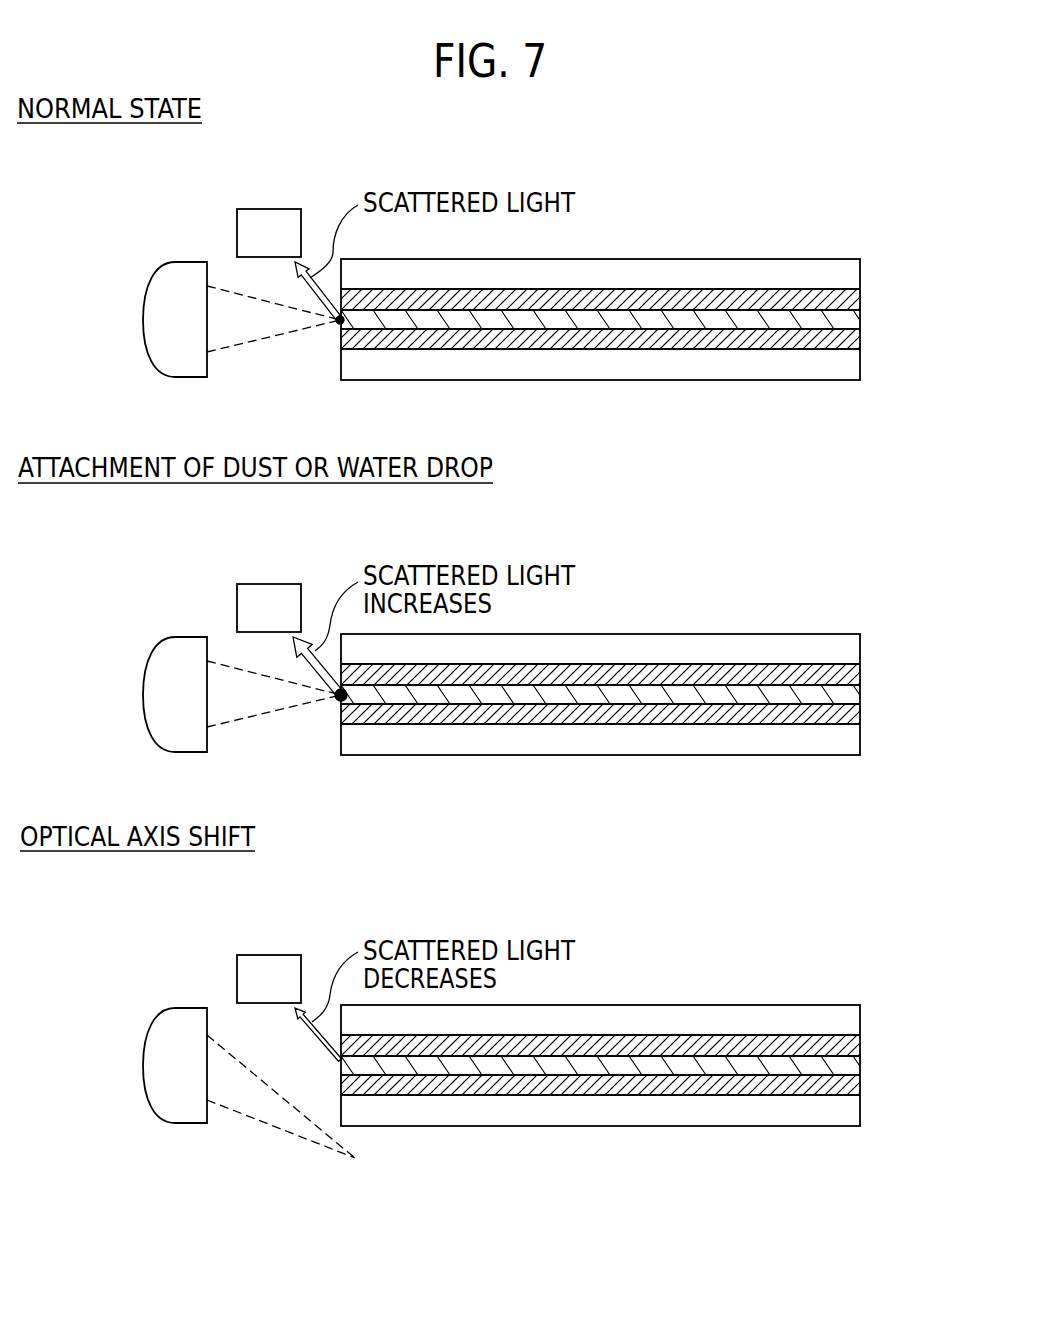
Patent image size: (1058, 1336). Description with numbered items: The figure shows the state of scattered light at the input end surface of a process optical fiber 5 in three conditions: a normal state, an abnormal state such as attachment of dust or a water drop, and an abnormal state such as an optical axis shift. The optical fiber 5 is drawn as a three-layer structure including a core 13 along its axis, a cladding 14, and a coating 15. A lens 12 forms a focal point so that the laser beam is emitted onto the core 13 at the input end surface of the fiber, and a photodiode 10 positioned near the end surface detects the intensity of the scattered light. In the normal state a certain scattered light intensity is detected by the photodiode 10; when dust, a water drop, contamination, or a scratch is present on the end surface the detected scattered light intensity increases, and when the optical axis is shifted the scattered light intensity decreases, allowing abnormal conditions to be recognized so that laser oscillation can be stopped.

The optical fiber 5 is at (683, 258).
The photodiode 10 is at (266, 209).
The lens 12 is at (147, 290).
The core 13 is at (860, 318).
The cladding 14 is at (860, 292).
The coating 15 is at (860, 267).